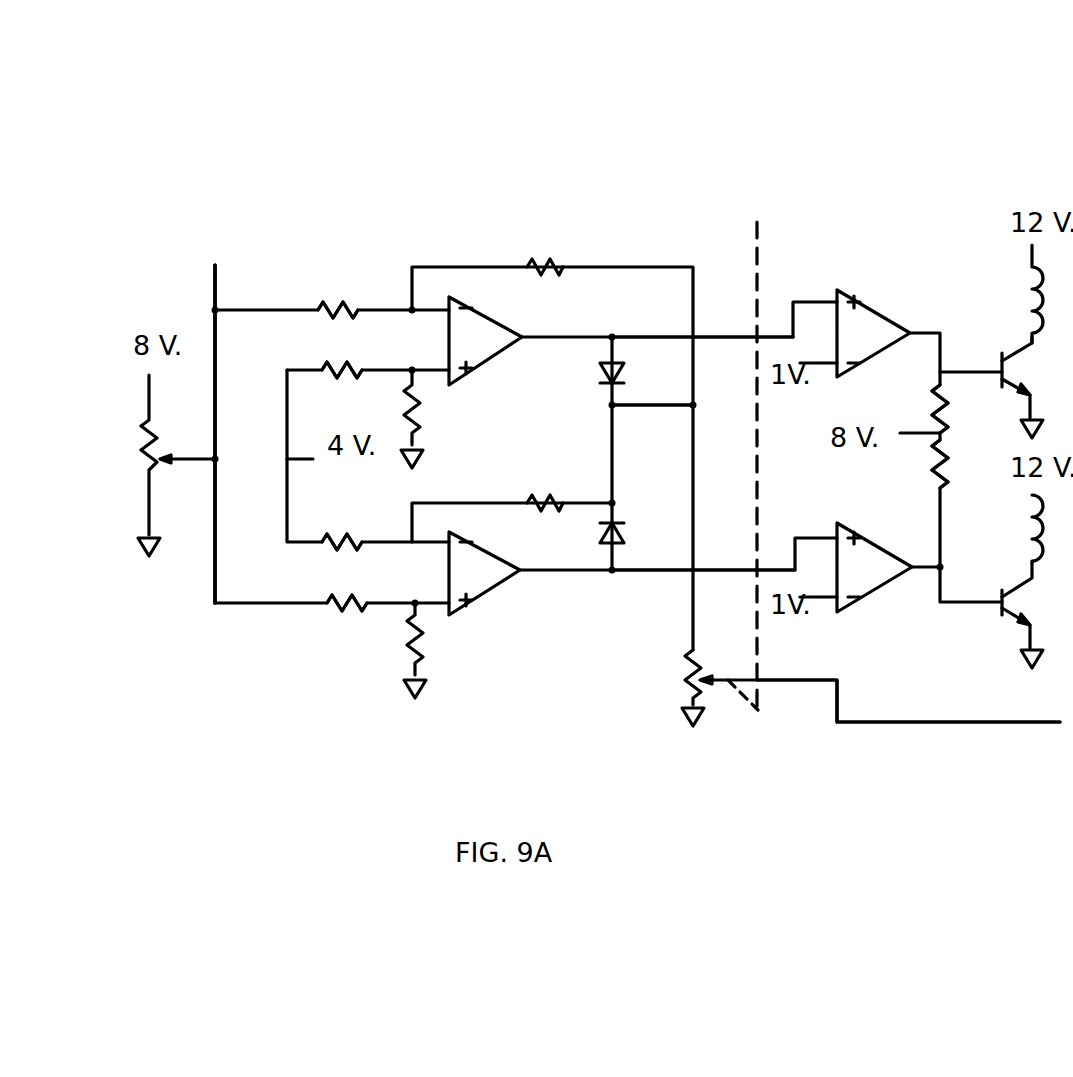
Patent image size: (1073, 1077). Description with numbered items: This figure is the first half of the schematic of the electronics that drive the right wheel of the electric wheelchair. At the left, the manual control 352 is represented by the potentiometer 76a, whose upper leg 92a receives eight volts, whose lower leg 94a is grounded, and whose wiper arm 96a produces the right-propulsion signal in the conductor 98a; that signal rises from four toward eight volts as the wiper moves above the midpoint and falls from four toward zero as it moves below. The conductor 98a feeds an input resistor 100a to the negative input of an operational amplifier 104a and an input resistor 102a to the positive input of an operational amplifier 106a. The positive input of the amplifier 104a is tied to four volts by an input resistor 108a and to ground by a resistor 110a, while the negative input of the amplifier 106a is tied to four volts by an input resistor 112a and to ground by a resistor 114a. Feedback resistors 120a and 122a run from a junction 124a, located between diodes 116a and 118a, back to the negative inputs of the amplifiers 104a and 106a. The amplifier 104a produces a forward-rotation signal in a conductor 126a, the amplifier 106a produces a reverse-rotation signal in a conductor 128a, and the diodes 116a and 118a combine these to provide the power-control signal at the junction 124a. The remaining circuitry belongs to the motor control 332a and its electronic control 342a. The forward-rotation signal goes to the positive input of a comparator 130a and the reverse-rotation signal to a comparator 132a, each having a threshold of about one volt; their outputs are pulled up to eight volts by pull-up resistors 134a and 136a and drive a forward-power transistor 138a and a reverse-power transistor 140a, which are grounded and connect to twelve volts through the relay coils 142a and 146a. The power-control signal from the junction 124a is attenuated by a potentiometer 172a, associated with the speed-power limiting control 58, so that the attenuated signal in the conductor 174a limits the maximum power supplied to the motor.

The manual control 352 is at (213, 165).
The motor control 332a is at (597, 130).
The electronic control 342a is at (832, 85).
The conductor 98a is at (218, 278).
The upper leg 92a is at (148, 432).
The lower leg 94a is at (149, 494).
The wiper arm 96a is at (213, 461).
The potentiometer 76a is at (163, 630).
The input resistor 100a is at (346, 300).
The feedback resistor 120a is at (546, 262).
The input resistor 108a is at (343, 365).
The resistor 110a is at (417, 394).
The input resistor 112a is at (341, 546).
The input resistor 102a is at (346, 608).
The resistor 114a is at (412, 652).
The feedback resistor 122a is at (546, 500).
The operational amplifier 104a is at (496, 322).
The diode 116a is at (600, 377).
The junction 124a is at (612, 410).
The conductor 126a is at (718, 337).
The operational amplifier 106a is at (490, 580).
The diode 118a is at (600, 531).
The conductor 128a is at (632, 575).
The potentiometer 172a is at (677, 732).
The speed-power limiting control 58 is at (632, 707).
The comparator 130a is at (866, 305).
The pull-up resistor 134a is at (935, 395).
The pull-up resistor 136a is at (935, 476).
The forward-power transistor 138a is at (1002, 366).
The relay coil 142a is at (1020, 300).
The comparator 132a is at (866, 597).
The reverse-power transistor 140a is at (1002, 610).
The relay coil 146a is at (1030, 530).
The conductor 174a is at (878, 723).